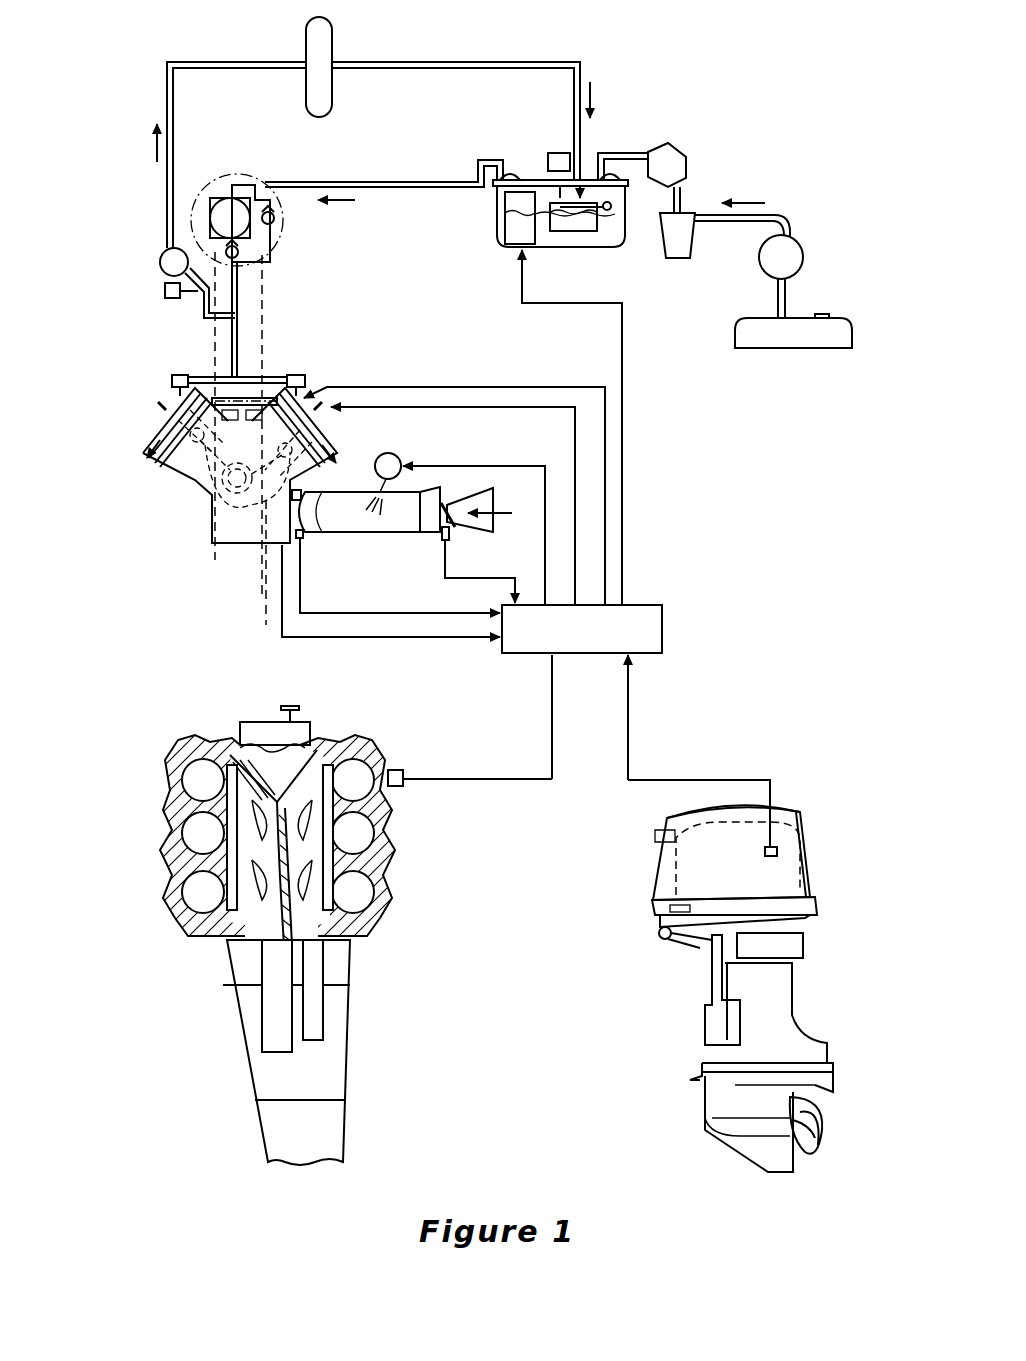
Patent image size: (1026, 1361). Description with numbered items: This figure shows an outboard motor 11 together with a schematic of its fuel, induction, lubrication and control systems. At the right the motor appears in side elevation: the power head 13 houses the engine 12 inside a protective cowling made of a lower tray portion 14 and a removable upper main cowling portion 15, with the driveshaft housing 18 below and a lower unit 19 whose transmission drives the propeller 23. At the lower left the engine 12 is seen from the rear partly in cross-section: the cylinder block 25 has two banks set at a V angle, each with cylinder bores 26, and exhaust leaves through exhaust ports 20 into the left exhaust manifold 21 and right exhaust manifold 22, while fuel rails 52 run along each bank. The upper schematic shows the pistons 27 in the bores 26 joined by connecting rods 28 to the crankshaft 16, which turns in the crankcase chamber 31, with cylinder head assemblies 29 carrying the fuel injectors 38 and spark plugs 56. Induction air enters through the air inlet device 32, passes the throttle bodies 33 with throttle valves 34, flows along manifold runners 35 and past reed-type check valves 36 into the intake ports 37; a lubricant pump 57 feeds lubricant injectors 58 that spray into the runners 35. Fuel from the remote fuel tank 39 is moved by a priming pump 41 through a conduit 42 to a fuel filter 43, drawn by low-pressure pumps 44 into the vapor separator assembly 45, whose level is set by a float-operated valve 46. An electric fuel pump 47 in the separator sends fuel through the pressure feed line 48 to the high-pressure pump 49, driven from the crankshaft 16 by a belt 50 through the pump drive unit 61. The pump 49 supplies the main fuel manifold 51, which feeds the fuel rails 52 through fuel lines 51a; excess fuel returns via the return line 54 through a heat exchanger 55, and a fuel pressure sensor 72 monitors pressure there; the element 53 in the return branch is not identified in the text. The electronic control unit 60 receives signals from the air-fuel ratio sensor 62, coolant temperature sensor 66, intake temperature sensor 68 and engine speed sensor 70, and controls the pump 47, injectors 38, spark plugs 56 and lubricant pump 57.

The outboard motor 11 is at (798, 788).
The internal combustion engine 12 is at (210, 535).
The power head 13 is at (805, 820).
The lower tray portion 14 is at (785, 935).
The upper main cowling portion 15 is at (800, 906).
The crankshaft 16 is at (250, 548).
The driveshaft housing 18 is at (350, 1078).
The lower unit 19 is at (705, 1092).
The exhaust ports 20 is at (245, 795).
The left exhaust manifold 21 is at (270, 1012).
The right exhaust manifold 22 is at (325, 1020).
The propeller 23 is at (815, 1150).
The cylinder block 25 is at (190, 478).
The cylinder bores 26 is at (165, 475).
The pistons 27 is at (190, 495).
The connecting rods 28 is at (218, 505).
The cylinder head assemblies 29 is at (400, 390).
The crankcase chamber 31 is at (226, 534).
The air inlet device 32 is at (497, 525).
The throttle bodies 33 is at (423, 522).
The throttle valves 34 is at (452, 532).
The manifold runners 35 is at (390, 540).
The reed-type check valves 36 is at (306, 518).
The intake ports 37 is at (392, 455).
The fuel injectors 38 is at (172, 385).
The fuel tank 39 is at (796, 348).
The priming pump 41 is at (800, 240).
The conduit 42 is at (772, 212).
The fuel filter 43 is at (688, 240).
The low-pressure pumps 44 is at (686, 162).
The vapor separator assembly 45 is at (615, 232).
The float-operated valve 46 is at (605, 202).
The low-pressure electrically driven fuel pump 47 is at (525, 230).
The pressure feed line 48 is at (352, 180).
The high-pressure pump 49 is at (228, 180).
The belt 50 is at (170, 232).
The main fuel manifold 51 is at (266, 330).
The fuel lines 51a is at (283, 745).
The fuel rails 52 is at (182, 375).
The pressure control valve 53 is at (160, 258).
The return line 54 is at (470, 58).
The heat exchanger 55 is at (325, 40).
The spark plugs 56 is at (335, 400).
The lubricant pump 57 is at (405, 455).
The lubricant injectors 58 is at (420, 488).
The electronic control unit 60 is at (664, 632).
The pump drive unit 61 is at (305, 728).
The air-fuel ratio sensor 62 is at (403, 775).
The coolant temperature sensor 66 is at (778, 850).
The intake temperature sensor 68 is at (300, 545).
The engine speed sensor 70 is at (266, 618).
The fuel pressure sensor 72 is at (163, 291).